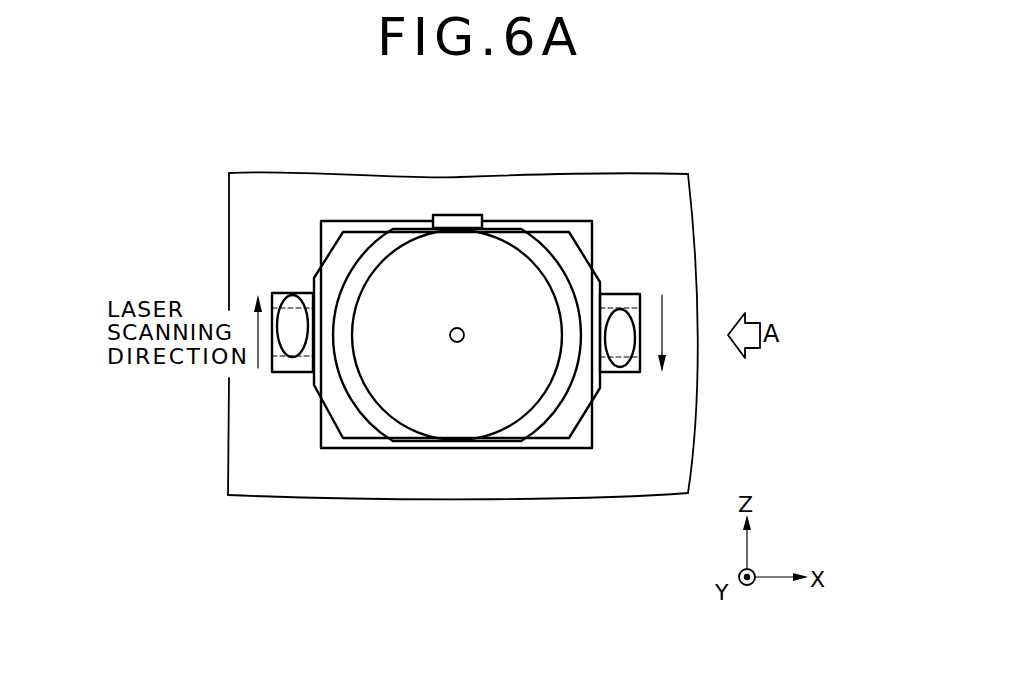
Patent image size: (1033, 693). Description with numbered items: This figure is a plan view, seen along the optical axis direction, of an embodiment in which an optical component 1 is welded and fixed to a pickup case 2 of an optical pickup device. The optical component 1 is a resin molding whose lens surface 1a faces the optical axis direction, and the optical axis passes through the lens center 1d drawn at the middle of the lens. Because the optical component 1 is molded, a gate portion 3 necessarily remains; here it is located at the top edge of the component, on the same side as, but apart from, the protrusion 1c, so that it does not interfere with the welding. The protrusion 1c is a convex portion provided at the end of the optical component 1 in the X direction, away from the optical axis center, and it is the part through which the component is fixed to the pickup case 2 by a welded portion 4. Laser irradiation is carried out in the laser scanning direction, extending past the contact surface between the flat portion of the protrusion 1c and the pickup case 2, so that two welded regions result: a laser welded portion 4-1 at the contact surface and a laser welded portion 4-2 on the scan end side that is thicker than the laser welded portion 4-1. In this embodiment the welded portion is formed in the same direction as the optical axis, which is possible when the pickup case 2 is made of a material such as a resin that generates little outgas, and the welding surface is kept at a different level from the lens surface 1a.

The optical component 1 is at (552, 229).
The lens surface 1a is at (418, 418).
The protrusion 1c is at (297, 364).
The lens center 1d is at (458, 343).
The pickup case 2 is at (263, 203).
The gate portion 3 is at (470, 214).
The welded portion 4 is at (278, 356).
The laser welded portion of the contact surface 4-1 is at (640, 313).
The thicker laser welded portion 4-2 is at (622, 366).